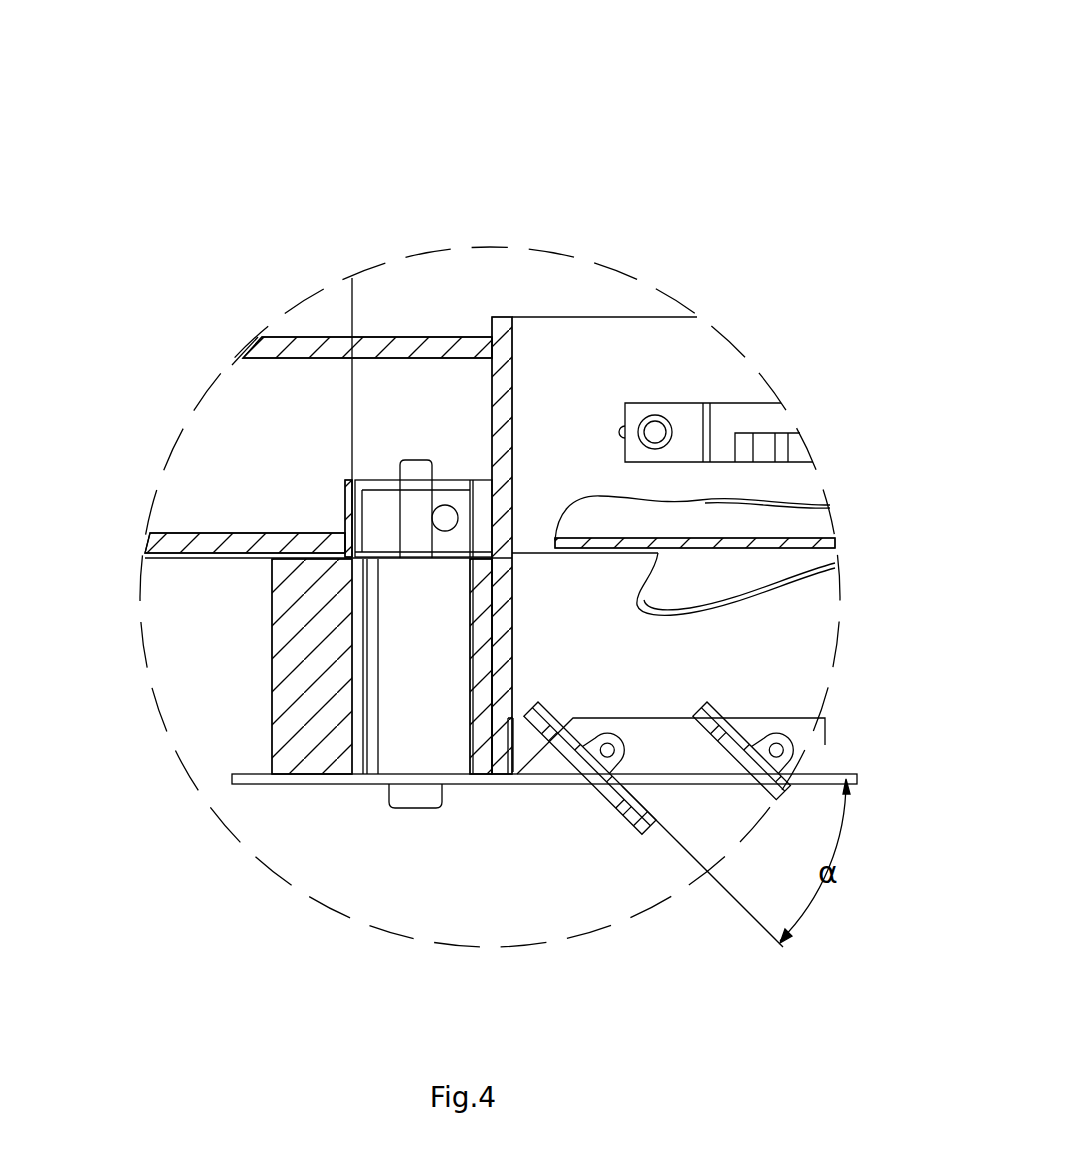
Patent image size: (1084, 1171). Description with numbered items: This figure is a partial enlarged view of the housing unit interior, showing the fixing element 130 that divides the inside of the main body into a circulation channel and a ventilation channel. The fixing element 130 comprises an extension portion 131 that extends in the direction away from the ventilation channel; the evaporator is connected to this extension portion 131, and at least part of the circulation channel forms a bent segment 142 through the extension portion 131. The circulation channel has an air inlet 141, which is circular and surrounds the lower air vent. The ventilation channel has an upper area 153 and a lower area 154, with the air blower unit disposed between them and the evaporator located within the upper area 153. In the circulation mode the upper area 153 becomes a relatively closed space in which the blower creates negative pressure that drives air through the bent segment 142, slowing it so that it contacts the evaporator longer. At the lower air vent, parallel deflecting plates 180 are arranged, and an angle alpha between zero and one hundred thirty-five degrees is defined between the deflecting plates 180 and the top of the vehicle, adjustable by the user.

The fixing element 130 is at (516, 380).
The extension portion 131 is at (410, 350).
The air inlet 141 is at (417, 773).
The bent segment 142 is at (277, 453).
The upper area 153 is at (672, 370).
The lower area 154 is at (693, 665).
The deflecting plates 180 is at (602, 815).